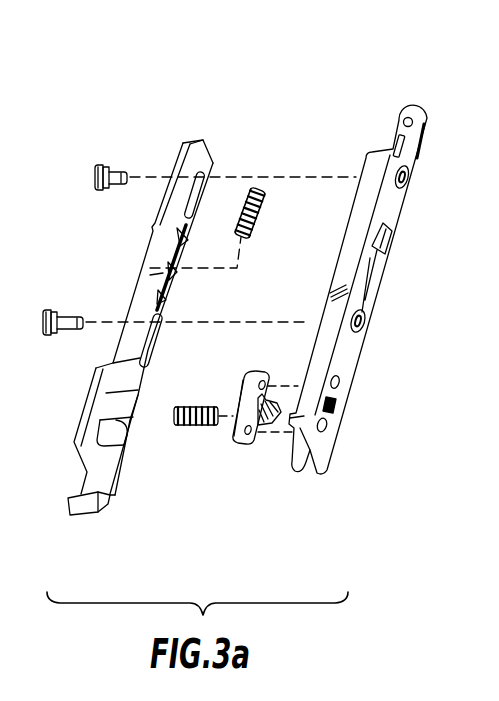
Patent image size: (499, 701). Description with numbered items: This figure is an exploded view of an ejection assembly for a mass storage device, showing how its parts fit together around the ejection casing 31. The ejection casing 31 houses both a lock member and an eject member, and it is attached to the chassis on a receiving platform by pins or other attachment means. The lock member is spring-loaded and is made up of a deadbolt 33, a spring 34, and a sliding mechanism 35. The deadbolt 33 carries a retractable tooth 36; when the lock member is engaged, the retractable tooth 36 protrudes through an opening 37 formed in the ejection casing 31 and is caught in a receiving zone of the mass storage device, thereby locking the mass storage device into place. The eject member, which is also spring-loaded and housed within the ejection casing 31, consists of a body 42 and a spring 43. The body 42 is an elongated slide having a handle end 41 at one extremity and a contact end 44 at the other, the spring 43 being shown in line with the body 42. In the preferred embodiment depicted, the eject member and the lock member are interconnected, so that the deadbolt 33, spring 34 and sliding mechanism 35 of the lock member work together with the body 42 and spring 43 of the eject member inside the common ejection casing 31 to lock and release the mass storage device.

The ejection casing 31 is at (362, 213).
The deadbolt 33 is at (240, 440).
The spring 34 is at (198, 407).
The sliding mechanism 35 is at (120, 435).
The retractable tooth 36 is at (271, 423).
The opening 37 is at (337, 407).
The handle end 41 is at (85, 512).
The body 42 is at (157, 258).
The spring 43 is at (248, 190).
The contact end 44 is at (194, 140).